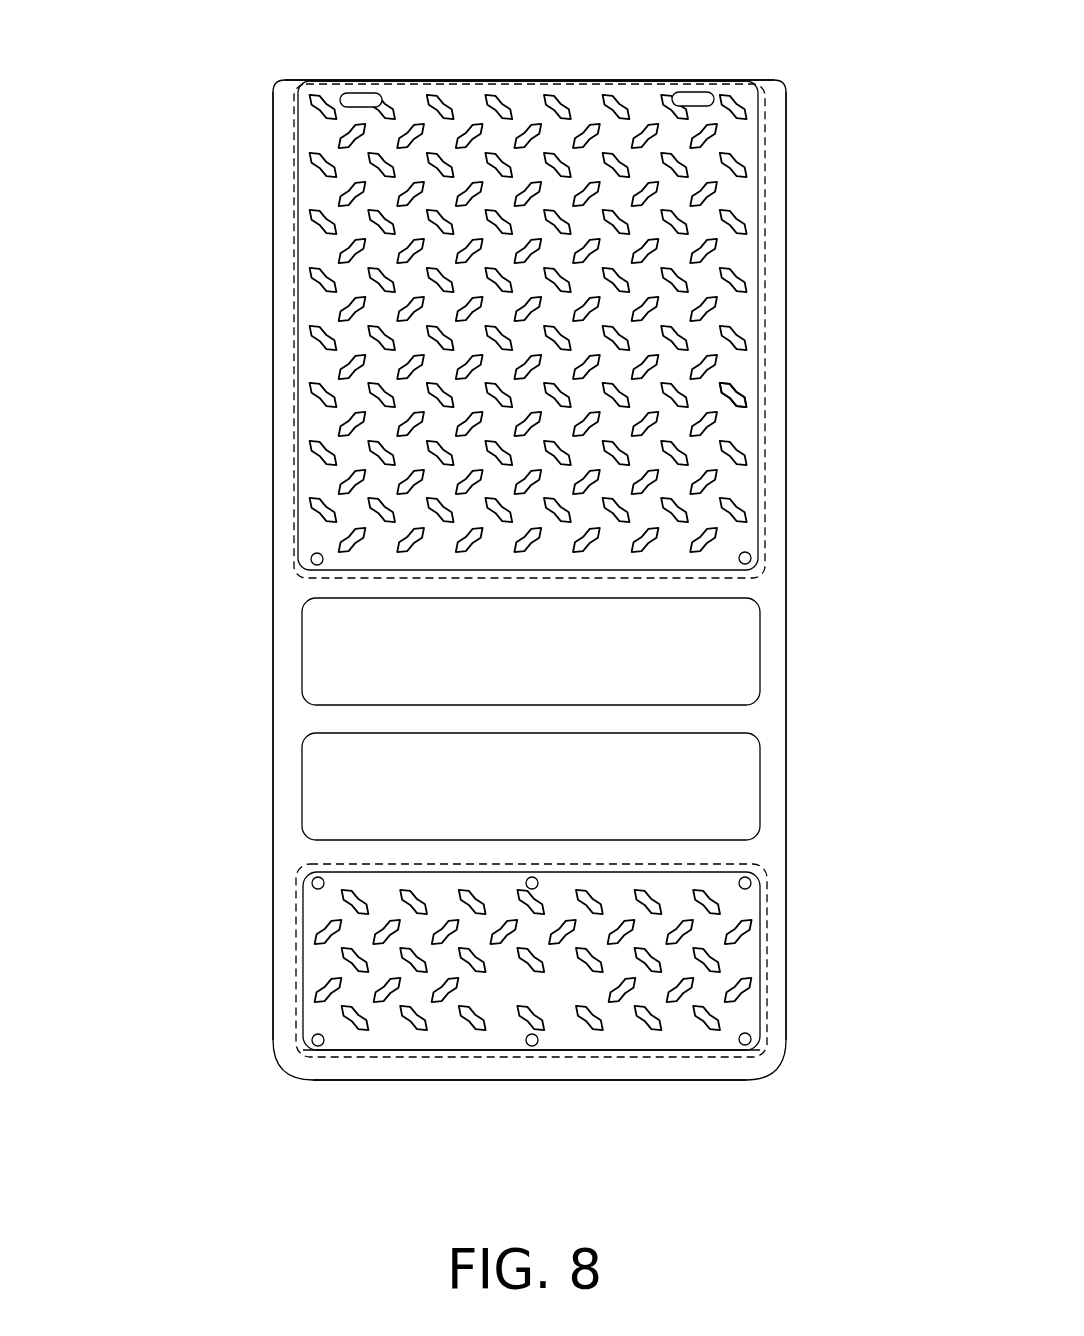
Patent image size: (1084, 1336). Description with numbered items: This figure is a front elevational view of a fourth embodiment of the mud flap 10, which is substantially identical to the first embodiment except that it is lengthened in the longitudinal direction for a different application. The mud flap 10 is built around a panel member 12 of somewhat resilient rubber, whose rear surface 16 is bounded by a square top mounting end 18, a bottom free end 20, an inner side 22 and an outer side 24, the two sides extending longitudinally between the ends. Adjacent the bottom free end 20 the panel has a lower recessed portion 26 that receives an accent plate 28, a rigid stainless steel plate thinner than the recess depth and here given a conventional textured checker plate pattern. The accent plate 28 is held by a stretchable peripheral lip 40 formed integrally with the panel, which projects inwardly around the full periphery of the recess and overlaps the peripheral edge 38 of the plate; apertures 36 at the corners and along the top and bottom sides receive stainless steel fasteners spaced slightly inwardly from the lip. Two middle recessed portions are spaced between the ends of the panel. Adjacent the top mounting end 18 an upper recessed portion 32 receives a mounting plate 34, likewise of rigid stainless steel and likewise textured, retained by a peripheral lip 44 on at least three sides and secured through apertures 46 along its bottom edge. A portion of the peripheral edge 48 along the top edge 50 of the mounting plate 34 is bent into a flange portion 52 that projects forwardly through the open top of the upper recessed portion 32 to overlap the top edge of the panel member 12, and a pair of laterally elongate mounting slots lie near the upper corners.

The mud flap 10 is at (93, 520).
The panel member 12 is at (290, 729).
The rear surface 16 is at (533, 725).
The top mounting end 18 is at (279, 82).
The bottom free end 20 is at (370, 1080).
The inner side 22 is at (786, 900).
The outer side 24 is at (275, 898).
The lower recessed portion 26 is at (482, 1020).
The accent plate 28 is at (465, 1033).
The upper recessed portion 32 is at (735, 372).
The mounting plate 34 is at (740, 430).
The apertures 36 is at (325, 1046).
The peripheral edge 38 is at (588, 1057).
The peripheral lip 40 is at (643, 1050).
The peripheral lip 44 is at (758, 252).
The apertures 46 is at (751, 558).
The peripheral edge 48 is at (765, 290).
The top edge 50 is at (583, 296).
The flange portion 52 is at (525, 83).